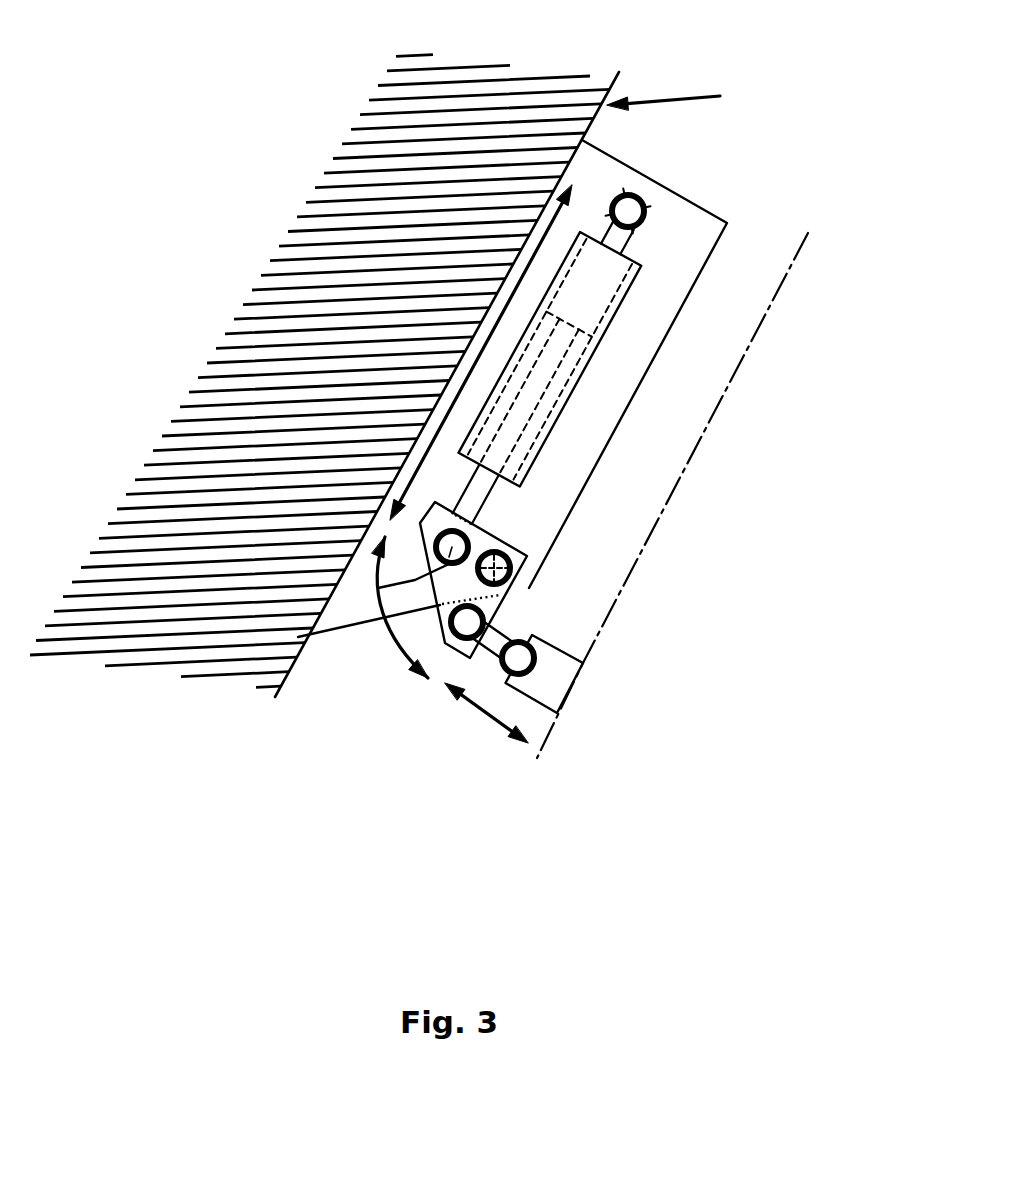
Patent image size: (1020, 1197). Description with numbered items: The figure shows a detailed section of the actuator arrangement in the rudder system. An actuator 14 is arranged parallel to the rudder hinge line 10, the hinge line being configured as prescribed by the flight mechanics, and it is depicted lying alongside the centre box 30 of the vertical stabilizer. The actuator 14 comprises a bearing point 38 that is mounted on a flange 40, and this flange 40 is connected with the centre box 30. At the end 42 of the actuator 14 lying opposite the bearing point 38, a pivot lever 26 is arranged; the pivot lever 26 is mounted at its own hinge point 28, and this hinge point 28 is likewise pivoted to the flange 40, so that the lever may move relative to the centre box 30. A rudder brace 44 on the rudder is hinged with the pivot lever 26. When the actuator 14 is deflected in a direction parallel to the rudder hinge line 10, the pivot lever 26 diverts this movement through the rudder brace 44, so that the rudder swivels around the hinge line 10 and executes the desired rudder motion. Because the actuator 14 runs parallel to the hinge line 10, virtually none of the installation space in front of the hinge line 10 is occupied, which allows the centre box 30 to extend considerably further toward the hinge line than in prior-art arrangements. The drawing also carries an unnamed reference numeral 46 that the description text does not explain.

The rudder hinge line 10 is at (789, 266).
The actuator 14 is at (558, 372).
The pivot lever 26 is at (514, 567).
The hinge point 28 is at (498, 540).
The centre box 30 is at (290, 290).
The bearing point 38 is at (645, 206).
The flange 40 is at (687, 231).
The end 42 is at (378, 588).
The rudder brace 44 is at (563, 677).
The connecting pin 46 is at (504, 670).